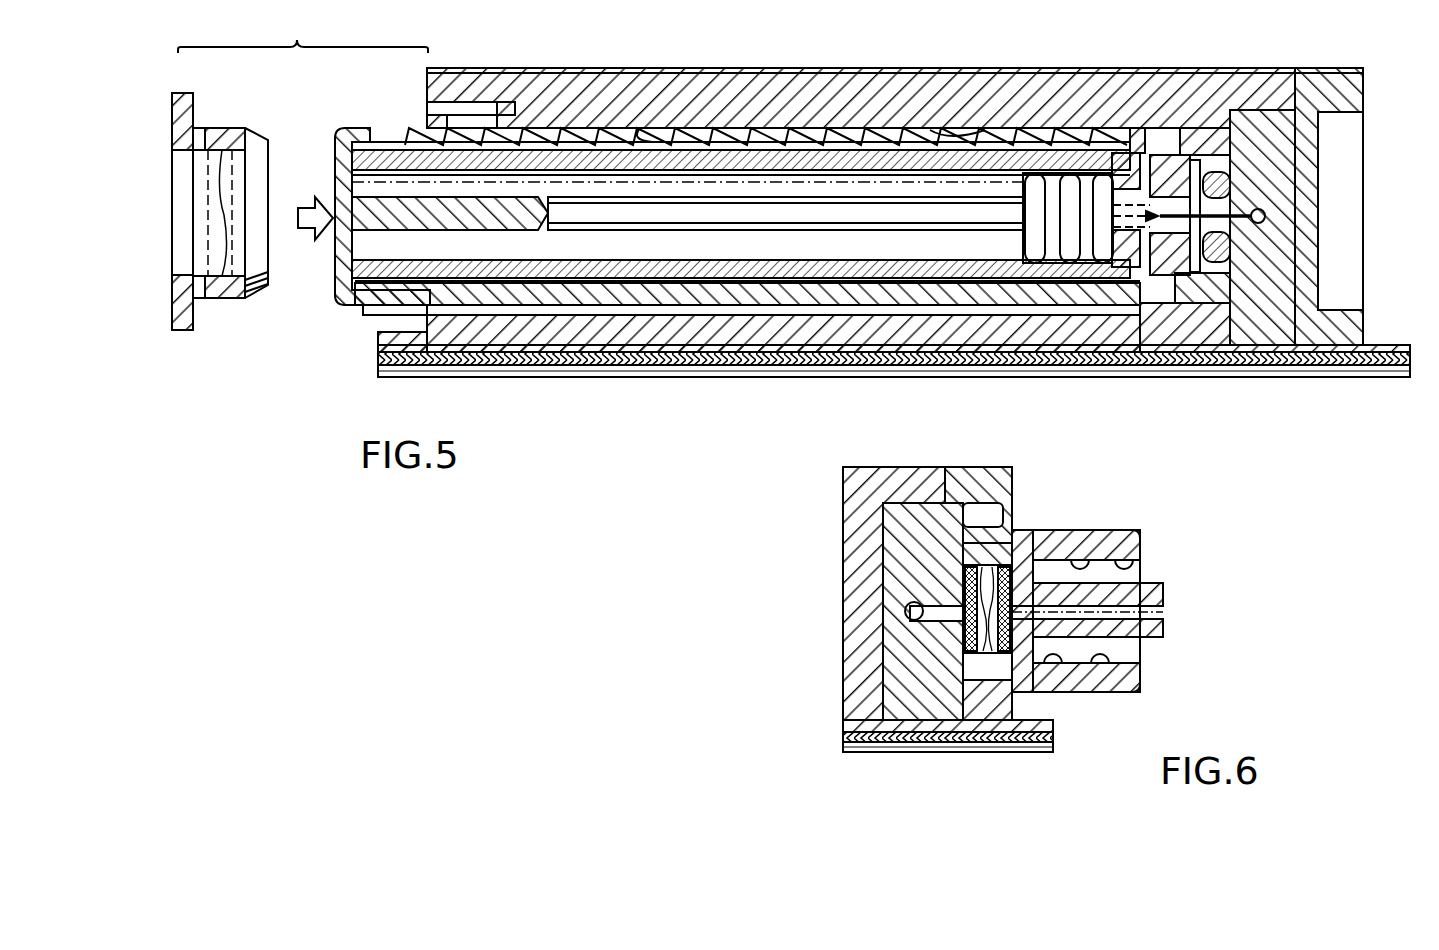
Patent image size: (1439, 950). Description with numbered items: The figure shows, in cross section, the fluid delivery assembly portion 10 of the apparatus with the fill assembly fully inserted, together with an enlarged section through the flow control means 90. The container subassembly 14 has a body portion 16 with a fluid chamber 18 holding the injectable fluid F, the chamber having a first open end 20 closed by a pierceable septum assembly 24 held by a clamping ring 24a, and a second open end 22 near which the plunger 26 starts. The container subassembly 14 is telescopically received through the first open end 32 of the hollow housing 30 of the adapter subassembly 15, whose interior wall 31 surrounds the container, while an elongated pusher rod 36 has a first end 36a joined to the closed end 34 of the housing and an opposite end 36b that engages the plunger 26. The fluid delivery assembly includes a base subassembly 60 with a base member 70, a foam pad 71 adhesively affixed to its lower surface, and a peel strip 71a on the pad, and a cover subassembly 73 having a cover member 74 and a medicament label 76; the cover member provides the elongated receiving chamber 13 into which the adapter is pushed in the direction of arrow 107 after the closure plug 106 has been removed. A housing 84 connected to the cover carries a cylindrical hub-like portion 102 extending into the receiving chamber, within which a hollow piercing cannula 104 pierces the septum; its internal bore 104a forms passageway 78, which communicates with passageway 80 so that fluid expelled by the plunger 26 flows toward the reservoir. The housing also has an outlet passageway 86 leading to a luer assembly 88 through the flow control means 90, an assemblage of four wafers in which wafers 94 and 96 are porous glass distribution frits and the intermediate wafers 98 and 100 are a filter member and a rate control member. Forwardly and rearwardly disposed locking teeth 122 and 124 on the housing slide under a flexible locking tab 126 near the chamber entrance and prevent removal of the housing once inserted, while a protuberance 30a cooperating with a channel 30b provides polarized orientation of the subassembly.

In FIG. 5, the fluid delivery assembly portion 10 is at (970, 53).
In FIG. 5, the elongated receiving chamber 13 is at (652, 128).
In FIG. 5, the container subassembly 14 is at (332, 137).
In FIG. 5, the adapter subassembly 15 is at (962, 310).
In FIG. 5, the body portion 16 is at (724, 275).
In FIG. 5, the fluid chamber 18 is at (785, 244).
In FIG. 5, the first open end 20 is at (1195, 165).
In FIG. 5, the second open end 22 is at (360, 182).
In FIG. 5, the pierceable septum assembly 24 is at (1240, 258).
In FIG. 5, the clamping ring 24a is at (1185, 324).
In FIG. 5, the plunger 26 is at (1022, 235).
In FIG. 5, the hollow housing 30 is at (505, 290).
In FIG. 5, the protuberance 30a is at (634, 312).
In FIG. 5, the channel 30b is at (838, 282).
In FIG. 5, the interior wall 31 is at (585, 285).
In FIG. 5, the first open end 32 is at (1128, 148).
In FIG. 5, the second closed end 34 is at (345, 163).
In FIG. 5, the pusher rod 36 is at (770, 212).
In FIG. 5, the first end 36a is at (380, 222).
In FIG. 5, the opposite end 36b is at (1005, 204).
In FIG. 5, the base subassembly 60 is at (378, 335).
In FIG. 5, the base member 70 is at (1398, 345).
In FIG. 6, the base member 70 is at (857, 752).
In FIG. 5, the foam pad 71 is at (1183, 365).
In FIG. 6, the foam pad 71 is at (877, 738).
In FIG. 5, the peel strip 71a is at (1271, 378).
In FIG. 6, the peel strip 71a is at (926, 754).
In FIG. 5, the cover subassembly 73 is at (519, 51).
In FIG. 5, the cover member 74 is at (764, 95).
In FIG. 6, the cover member 74 is at (855, 533).
In FIG. 5, the medicament label 76 is at (820, 75).
In FIG. 5, the passageway 78 is at (1165, 152).
In FIG. 5, the passageway 80 is at (1266, 216).
In FIG. 6, the passageway 80 is at (905, 611).
In FIG. 5, the housing 84 is at (1318, 78).
In FIG. 6, the housing 84 is at (1013, 476).
In FIG. 6, the outlet passageway 86 is at (900, 643).
In FIG. 6, the luer assembly 88 is at (1142, 547).
In FIG. 6, the flow control means 90 is at (978, 660).
In FIG. 6, the wafer 94 is at (965, 640).
In FIG. 6, the wafer 96 is at (1012, 662).
In FIG. 6, the filter member 98 is at (968, 580).
In FIG. 6, the rate control member 100 is at (995, 560).
In FIG. 5, the hub-like portion 102 is at (1198, 128).
In FIG. 5, the hollow piercing cannula 104 is at (1228, 190).
In FIG. 5, the internal bore 104a is at (1270, 195).
In FIG. 5, the closure plug 106 is at (226, 285).
In FIG. 5, the arrow 107 is at (303, 228).
In FIG. 5, the forwardly disposed locking teeth 122 is at (947, 128).
In FIG. 5, the rearwardly disposed locking teeth 124 is at (592, 128).
In FIG. 5, the flexible locking tab 126 is at (433, 128).
In FIG. 5, the injectable fluid F is at (1121, 217).